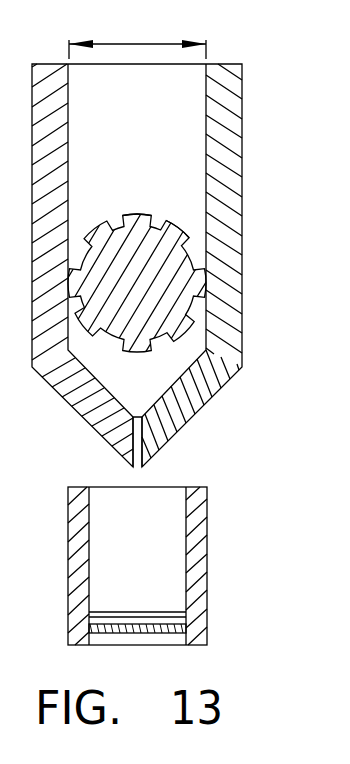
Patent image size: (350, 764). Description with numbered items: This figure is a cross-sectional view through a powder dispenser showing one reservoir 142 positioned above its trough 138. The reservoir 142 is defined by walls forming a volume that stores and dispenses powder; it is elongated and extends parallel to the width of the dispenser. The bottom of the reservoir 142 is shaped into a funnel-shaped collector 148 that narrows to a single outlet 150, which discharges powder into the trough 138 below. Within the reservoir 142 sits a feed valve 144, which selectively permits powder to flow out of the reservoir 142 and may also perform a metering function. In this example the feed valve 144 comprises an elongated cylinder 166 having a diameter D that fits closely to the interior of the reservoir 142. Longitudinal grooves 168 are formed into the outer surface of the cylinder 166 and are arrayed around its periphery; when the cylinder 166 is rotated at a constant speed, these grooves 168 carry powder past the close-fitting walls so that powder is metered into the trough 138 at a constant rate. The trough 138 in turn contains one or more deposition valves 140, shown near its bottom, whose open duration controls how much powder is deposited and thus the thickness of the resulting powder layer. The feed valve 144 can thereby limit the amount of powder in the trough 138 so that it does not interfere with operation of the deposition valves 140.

The trough 138 is at (197, 552).
The deposition valve 140 is at (143, 633).
The reservoir 142 is at (220, 187).
The feed valve 144 is at (139, 162).
The funnel-shaped collector 148 is at (202, 383).
The outlet 150 is at (144, 468).
The elongated cylinder 166 is at (138, 215).
The longitudinal grooves 168 is at (167, 228).
The diameter D is at (137, 44).